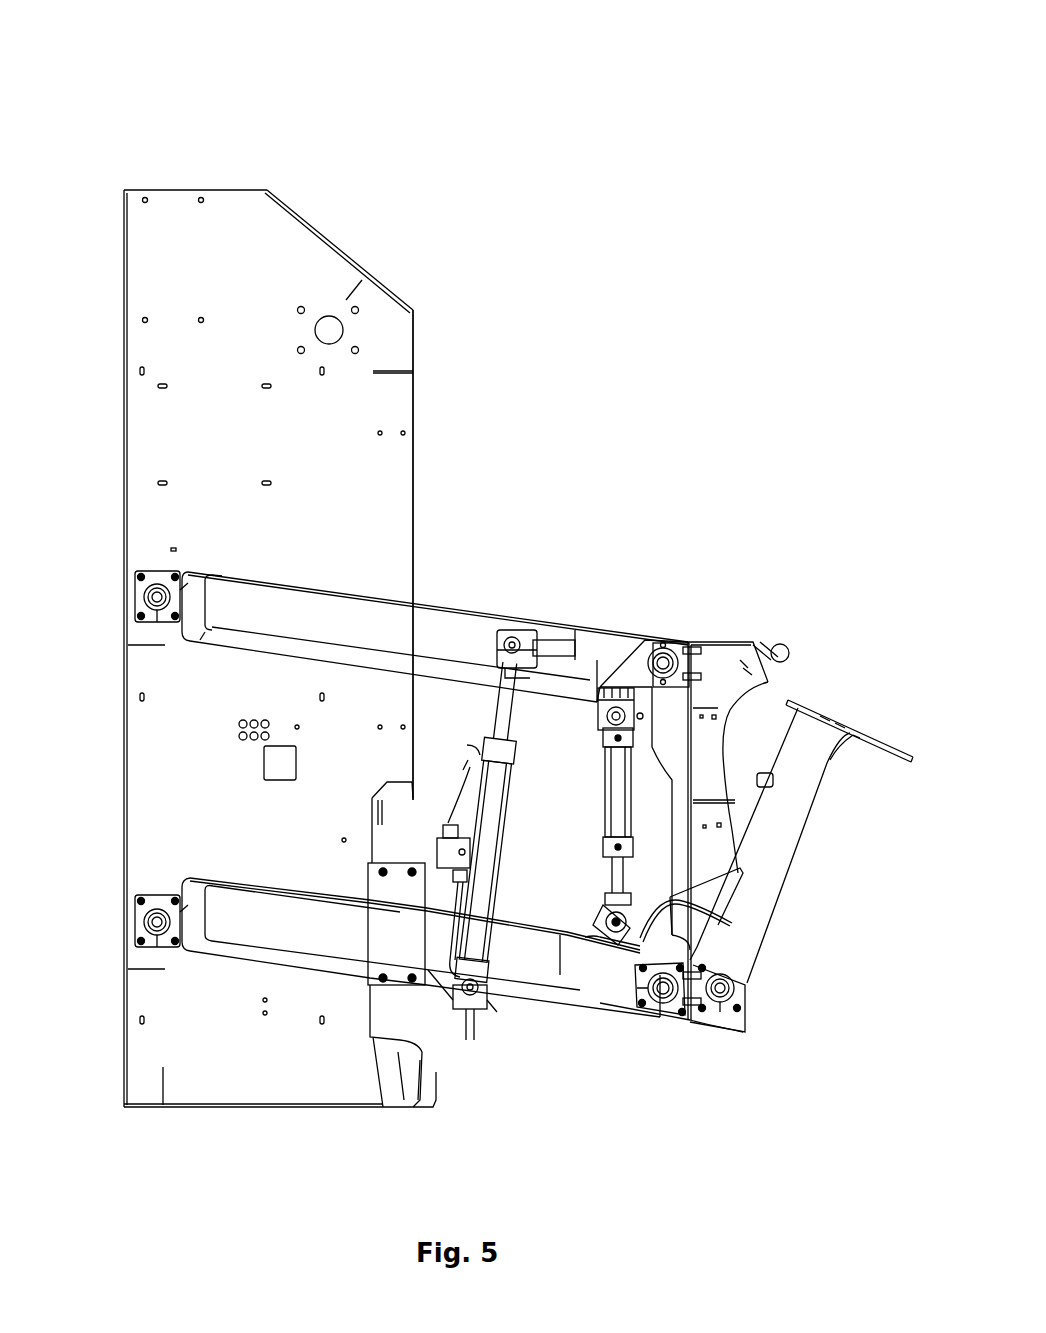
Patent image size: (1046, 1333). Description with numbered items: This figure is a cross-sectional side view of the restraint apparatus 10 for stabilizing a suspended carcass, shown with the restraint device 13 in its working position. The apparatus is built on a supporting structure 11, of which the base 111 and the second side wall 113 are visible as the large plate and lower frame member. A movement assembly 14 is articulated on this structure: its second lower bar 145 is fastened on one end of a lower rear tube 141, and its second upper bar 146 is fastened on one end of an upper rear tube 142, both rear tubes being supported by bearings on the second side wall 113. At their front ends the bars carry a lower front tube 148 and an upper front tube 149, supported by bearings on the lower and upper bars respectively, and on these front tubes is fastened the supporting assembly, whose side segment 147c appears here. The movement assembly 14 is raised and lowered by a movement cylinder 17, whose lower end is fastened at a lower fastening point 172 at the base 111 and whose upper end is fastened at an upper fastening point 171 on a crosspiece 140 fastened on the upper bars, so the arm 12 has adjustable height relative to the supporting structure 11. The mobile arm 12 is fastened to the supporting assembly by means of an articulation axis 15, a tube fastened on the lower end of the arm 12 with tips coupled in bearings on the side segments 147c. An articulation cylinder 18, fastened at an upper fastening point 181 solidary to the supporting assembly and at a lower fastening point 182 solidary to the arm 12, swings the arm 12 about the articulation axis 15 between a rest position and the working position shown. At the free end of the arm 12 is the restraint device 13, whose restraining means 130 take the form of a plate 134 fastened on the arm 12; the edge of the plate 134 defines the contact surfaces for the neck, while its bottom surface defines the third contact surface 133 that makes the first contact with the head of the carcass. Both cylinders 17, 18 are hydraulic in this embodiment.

The restraint apparatus 10 is at (231, 100).
The supporting structure 11 is at (324, 220).
The second side wall 113 is at (150, 284).
The base 111 is at (435, 1072).
The movement assembly 14 is at (449, 592).
The second lower bar 145 is at (558, 975).
The upper rear tube 142 is at (150, 597).
The lower rear tube 141 is at (150, 925).
The movement cylinder 17 is at (505, 703).
The upper fastening point 171 is at (515, 635).
The lower fastening point 172 is at (485, 1005).
The articulation cylinder 18 is at (618, 778).
The upper fastening point 181 is at (634, 700).
The lower fastening point 182 is at (614, 940).
The crosspiece 140 is at (575, 630).
The second upper bar 146 is at (612, 652).
The upper front tube 149 is at (667, 643).
The side segment 147c is at (718, 663).
The plate 134 is at (798, 708).
The arm 12 is at (790, 830).
The restraint device 13 is at (866, 676).
The restraining means 130 is at (908, 738).
The third contact surface 133 is at (873, 745).
The lower front tube 148 is at (662, 1003).
The articulation axis 15 is at (733, 992).